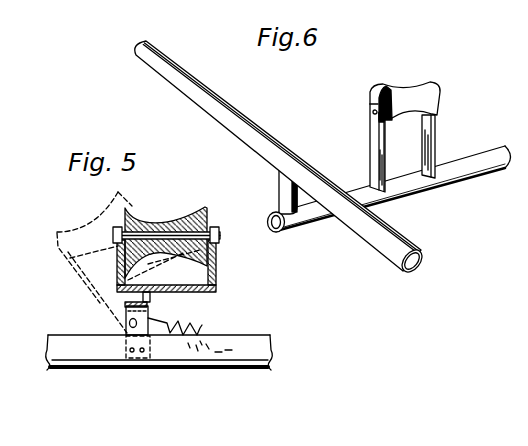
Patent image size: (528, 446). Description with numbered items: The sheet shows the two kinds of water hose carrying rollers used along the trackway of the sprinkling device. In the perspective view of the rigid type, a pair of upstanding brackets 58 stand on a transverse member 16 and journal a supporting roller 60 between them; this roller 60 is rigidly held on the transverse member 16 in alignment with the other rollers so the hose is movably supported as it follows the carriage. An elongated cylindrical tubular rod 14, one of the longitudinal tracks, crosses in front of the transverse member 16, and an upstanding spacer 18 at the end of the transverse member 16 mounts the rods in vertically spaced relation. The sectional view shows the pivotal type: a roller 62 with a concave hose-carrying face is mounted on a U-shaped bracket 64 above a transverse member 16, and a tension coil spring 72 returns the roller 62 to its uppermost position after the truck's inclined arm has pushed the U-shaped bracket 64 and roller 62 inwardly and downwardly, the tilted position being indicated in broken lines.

In FIG. 6, the cylindrical tubular rod 14 is at (416, 250).
In FIG. 5, the transverse member 16 is at (260, 368).
In FIG. 6, the transverse member 16 is at (502, 166).
In FIG. 6, the upstanding spacer 18 is at (289, 192).
In FIG. 6, the upstanding bracket 58 is at (376, 148).
In FIG. 6, the supporting roller 60 is at (402, 95).
In FIG. 5, the roller 62 is at (68, 228).
In FIG. 5, the U-shaped bracket 64 is at (216, 266).
In FIG. 5, the tension coil spring 72 is at (202, 325).